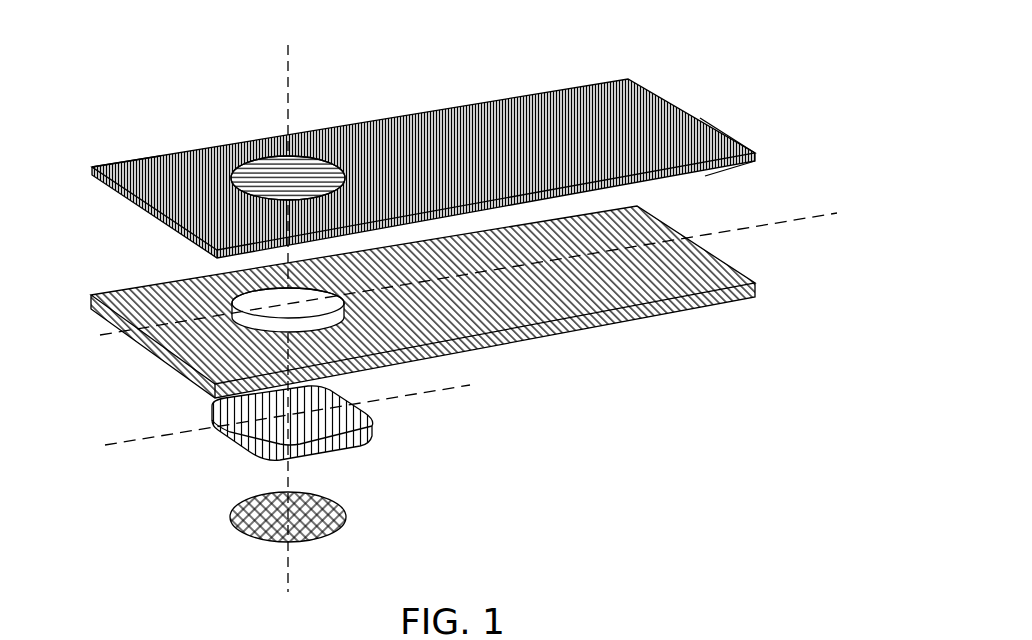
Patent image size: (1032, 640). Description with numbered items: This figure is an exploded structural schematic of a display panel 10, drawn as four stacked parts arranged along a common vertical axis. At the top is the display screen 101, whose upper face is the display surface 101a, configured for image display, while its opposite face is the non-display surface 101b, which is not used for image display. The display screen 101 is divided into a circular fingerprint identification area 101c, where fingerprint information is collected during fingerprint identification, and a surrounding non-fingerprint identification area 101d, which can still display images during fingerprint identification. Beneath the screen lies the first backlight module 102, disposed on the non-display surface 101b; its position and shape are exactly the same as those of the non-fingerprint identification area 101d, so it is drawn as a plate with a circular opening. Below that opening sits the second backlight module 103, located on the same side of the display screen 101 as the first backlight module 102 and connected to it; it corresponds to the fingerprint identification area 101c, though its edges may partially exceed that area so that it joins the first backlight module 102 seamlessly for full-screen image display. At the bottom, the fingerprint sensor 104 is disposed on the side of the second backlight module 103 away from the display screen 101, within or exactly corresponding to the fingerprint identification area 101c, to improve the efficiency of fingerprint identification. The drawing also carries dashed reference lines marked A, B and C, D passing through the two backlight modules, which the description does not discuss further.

The display panel 10 is at (718, 66).
The display screen 101 is at (207, 72).
The display surface 101a is at (757, 155).
The non-display surface 101b is at (703, 177).
The fingerprint identification area 101c is at (263, 170).
The non-fingerprint identification area 101d is at (123, 161).
The first backlight module 102 is at (122, 290).
The second backlight module 103 is at (212, 408).
The fingerprint sensor 104 is at (240, 520).
The section line A end A is at (449, 283).
The section line B end B is at (861, 214).
The section line C end C is at (266, 423).
The section line D end D is at (489, 384).